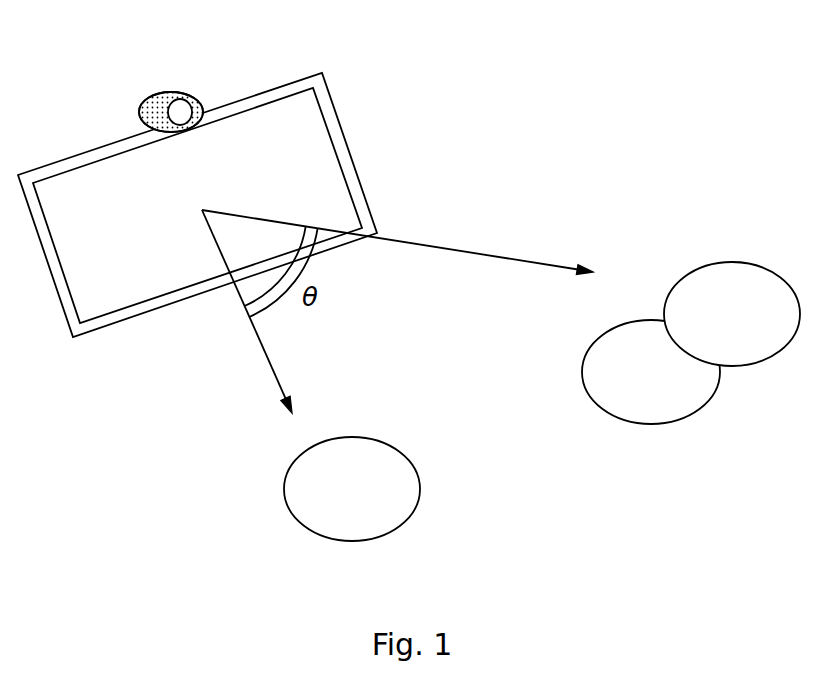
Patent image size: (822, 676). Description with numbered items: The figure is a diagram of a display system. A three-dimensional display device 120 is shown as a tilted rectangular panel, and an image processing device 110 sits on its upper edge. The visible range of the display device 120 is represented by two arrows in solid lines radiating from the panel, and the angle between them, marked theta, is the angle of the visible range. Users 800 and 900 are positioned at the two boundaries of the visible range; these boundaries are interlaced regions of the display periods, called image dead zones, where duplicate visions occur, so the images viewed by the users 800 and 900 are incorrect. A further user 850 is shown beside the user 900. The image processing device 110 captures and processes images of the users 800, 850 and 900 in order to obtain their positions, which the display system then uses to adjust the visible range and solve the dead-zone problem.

The image processing device 110 is at (172, 90).
The 3D display device 120 is at (293, 108).
The user 800 is at (350, 437).
The user 850 is at (630, 318).
The user 900 is at (729, 262).